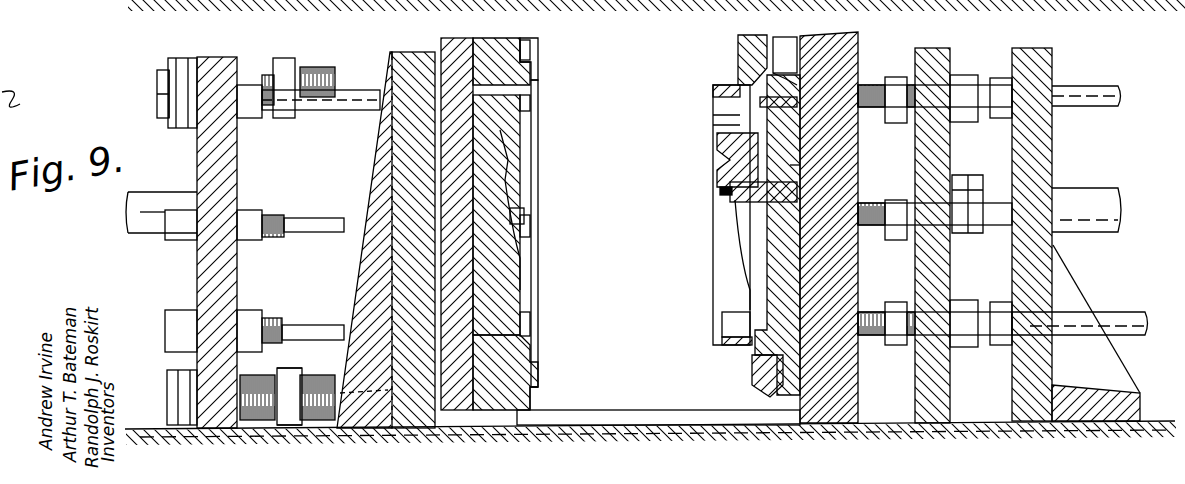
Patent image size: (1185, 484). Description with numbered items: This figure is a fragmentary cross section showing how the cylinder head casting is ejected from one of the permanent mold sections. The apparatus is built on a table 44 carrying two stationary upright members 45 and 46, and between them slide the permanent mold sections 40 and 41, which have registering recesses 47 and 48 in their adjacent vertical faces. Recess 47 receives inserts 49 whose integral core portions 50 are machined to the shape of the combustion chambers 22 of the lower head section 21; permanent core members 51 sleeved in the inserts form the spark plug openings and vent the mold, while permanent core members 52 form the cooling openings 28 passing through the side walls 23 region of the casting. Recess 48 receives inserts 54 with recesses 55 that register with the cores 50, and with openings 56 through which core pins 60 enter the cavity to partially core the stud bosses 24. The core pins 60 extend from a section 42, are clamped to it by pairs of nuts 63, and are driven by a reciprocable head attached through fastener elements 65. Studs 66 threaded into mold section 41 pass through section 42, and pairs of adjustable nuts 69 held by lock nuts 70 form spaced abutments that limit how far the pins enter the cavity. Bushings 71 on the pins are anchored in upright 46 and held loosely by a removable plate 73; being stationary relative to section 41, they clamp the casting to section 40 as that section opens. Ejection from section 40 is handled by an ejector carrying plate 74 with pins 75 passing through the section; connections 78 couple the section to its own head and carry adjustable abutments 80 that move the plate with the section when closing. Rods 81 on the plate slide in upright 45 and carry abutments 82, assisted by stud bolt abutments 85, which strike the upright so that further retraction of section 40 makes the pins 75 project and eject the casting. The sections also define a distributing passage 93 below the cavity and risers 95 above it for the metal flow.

The lower section of the cylinder head 21 is at (717, 160).
The combustion chambers 22 is at (740, 250).
The side walls 23 is at (713, 95).
The stud bosses 24 is at (735, 325).
The openings 28 is at (740, 80).
The permanent mold section 40 is at (846, 50).
The permanent mold section 41 is at (538, 58).
The section 42 is at (238, 176).
The table 44 is at (615, 412).
The upright member 45 is at (1040, 162).
The upright member 46 is at (392, 56).
The recess 47 is at (800, 145).
The recess 48 is at (472, 133).
The inserts 49 is at (790, 165).
The core portions 50 is at (735, 200).
The permanent core members 51 is at (720, 192).
The permanent core members 52 is at (760, 104).
The inserts 54 is at (520, 276).
The recesses 55 is at (512, 255).
The openings 56 is at (524, 214).
The core pins 60 is at (320, 110).
The clamping nuts 63 is at (190, 128).
The fastener elements 65 is at (150, 236).
The studs 66 is at (312, 70).
The adjustable nuts 69 is at (186, 58).
The lock nuts 70 is at (168, 70).
The bushings 71 is at (530, 102).
The removable plate 73 is at (428, 10).
The ejector carrying plate 74 is at (936, 66).
The ejector pins 75 is at (866, 95).
The connections 78 is at (1088, 192).
The adjustable abutments 80 is at (962, 183).
The rods 81 is at (1076, 90).
The abutment 82 is at (1000, 346).
The additional abutments 85 is at (1001, 82).
The distributing passage 93 is at (540, 384).
The risers 95 is at (527, 42).